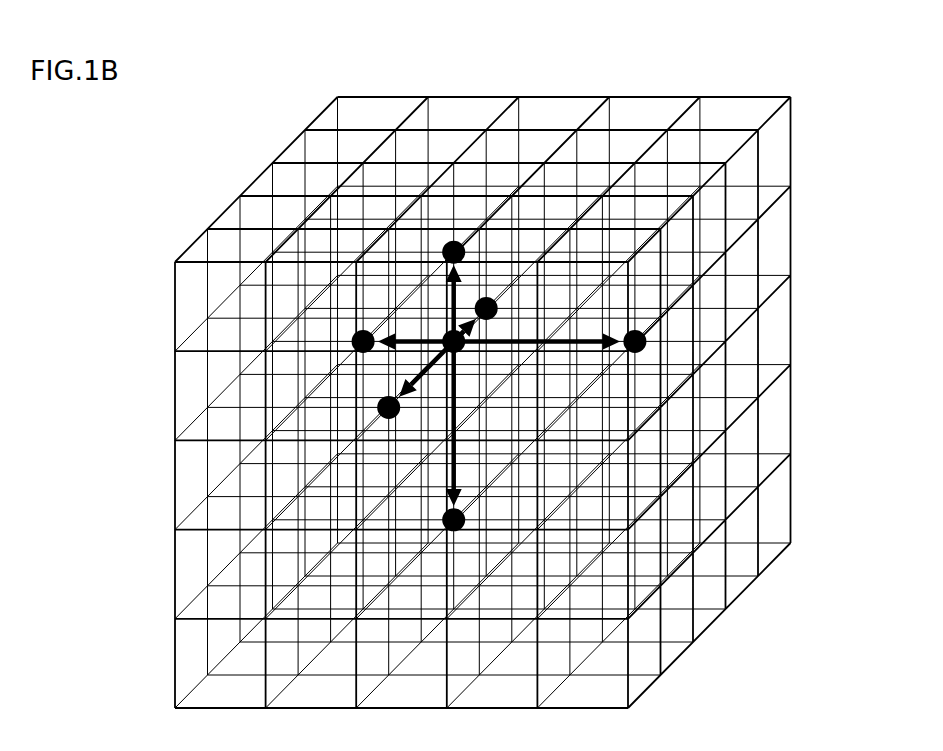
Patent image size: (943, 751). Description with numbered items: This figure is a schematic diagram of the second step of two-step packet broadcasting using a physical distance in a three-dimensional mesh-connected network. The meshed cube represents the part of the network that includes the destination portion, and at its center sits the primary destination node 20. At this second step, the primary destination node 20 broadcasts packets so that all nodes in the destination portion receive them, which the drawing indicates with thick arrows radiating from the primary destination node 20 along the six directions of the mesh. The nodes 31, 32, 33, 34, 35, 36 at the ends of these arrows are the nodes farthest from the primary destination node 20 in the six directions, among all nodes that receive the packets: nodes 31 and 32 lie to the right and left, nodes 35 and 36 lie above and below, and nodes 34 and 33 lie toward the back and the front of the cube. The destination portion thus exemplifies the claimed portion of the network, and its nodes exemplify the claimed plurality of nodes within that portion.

The primary destination node 20 is at (446, 332).
The node farthest from the primary destination node 31 is at (648, 340).
The node farthest from the primary destination node 32 is at (350, 342).
The node farthest from the primary destination node 33 is at (373, 407).
The node farthest from the primary destination node 34 is at (487, 294).
The node farthest from the primary destination node 35 is at (452, 238).
The node farthest from the primary destination node 36 is at (440, 520).